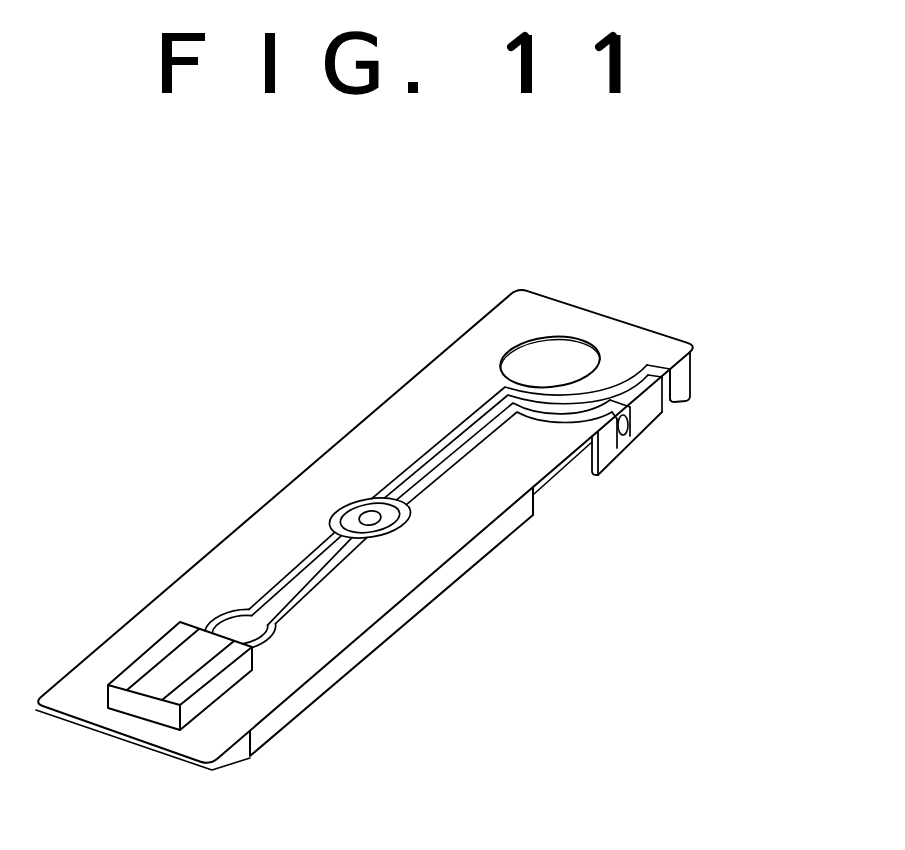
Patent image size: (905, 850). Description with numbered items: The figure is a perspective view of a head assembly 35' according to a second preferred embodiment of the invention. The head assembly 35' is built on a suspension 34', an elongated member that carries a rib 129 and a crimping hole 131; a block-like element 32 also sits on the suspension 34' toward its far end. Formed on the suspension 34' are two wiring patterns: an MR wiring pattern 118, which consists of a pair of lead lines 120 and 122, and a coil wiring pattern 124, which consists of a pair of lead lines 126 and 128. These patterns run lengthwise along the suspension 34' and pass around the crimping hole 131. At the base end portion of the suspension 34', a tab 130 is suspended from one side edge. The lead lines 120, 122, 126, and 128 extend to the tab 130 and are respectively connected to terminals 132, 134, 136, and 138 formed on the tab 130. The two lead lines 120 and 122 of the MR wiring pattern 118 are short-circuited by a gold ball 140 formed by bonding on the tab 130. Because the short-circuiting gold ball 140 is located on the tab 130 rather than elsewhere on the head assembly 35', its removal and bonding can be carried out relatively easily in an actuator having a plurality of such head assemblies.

The chip element 32 is at (165, 672).
The suspension 34' is at (314, 540).
The head assembly 35' is at (365, 493).
The MR wiring pattern 118 is at (312, 594).
The lead line 120 is at (436, 471).
The lead line 122 is at (537, 488).
The coil wiring pattern 124 is at (307, 555).
The lead line 126 is at (440, 437).
The lead line 128 is at (410, 469).
The rib 129 is at (322, 697).
The tab 130 is at (684, 381).
The crimping hole 131 is at (543, 342).
The terminal 132 is at (633, 437).
The terminal 134 is at (617, 449).
The terminal 136 is at (671, 400).
The terminal 138 is at (663, 408).
The gold ball 140 is at (633, 438).